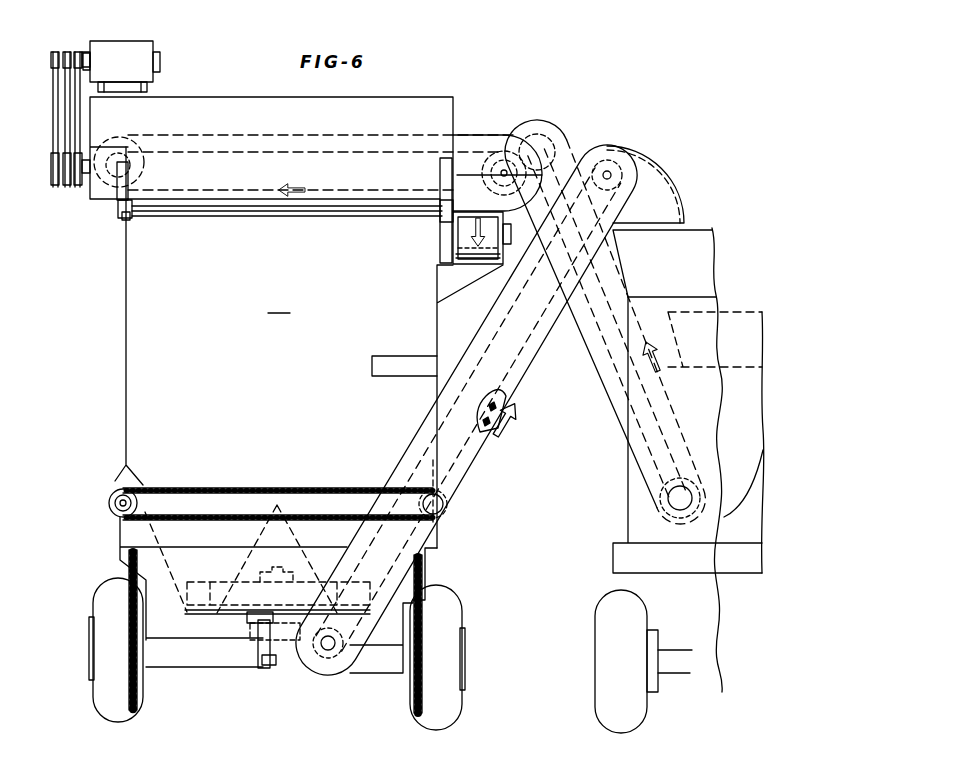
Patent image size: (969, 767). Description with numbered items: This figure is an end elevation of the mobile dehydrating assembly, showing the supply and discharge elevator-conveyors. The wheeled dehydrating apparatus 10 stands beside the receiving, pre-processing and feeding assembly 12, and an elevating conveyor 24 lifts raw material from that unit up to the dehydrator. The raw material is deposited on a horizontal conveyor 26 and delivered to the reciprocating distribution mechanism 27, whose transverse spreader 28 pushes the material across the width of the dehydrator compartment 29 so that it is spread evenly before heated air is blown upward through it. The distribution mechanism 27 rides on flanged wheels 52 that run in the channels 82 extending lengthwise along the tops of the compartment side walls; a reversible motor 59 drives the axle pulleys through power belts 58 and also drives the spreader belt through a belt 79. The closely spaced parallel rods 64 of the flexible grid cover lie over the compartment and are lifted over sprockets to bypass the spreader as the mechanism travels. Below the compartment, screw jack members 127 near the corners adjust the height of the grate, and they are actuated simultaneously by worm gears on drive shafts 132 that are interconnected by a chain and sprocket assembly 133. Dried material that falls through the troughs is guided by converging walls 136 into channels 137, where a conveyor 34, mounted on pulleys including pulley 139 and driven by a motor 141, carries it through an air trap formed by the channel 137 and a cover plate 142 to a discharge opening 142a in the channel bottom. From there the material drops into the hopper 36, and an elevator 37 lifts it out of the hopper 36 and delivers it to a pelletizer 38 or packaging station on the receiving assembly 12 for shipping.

The dehydrating apparatus 10 is at (112, 313).
The receiving, pre-processing and feeding assembly 12 is at (620, 492).
The elevating conveyor 24 is at (600, 357).
The horizontal conveyor 26 is at (455, 252).
The reciprocating distribution mechanism 27 is at (437, 96).
The transverse spreader 28 is at (213, 135).
The dehydrator compartment 29 is at (279, 304).
The conveyor 34 is at (208, 583).
The hopper 36 is at (306, 672).
The elevator 37 is at (474, 461).
The pelletizer 38 is at (703, 229).
The wheels 52 is at (118, 196).
The power belts 58 is at (78, 133).
The reversible motor 59 is at (128, 40).
The parallel rods 64 is at (225, 216).
The belt 79 is at (55, 104).
The channels 82 is at (122, 216).
The screw jack members 127 is at (128, 566).
The drive shafts 132 is at (110, 504).
The chain and sprocket assembly 133 is at (248, 487).
The converging walls 136 is at (165, 540).
The channels 137 is at (203, 616).
The pulley 139 is at (288, 580).
The motor 141 is at (263, 664).
The cover plate 142 is at (262, 575).
The discharge opening 142a is at (262, 648).